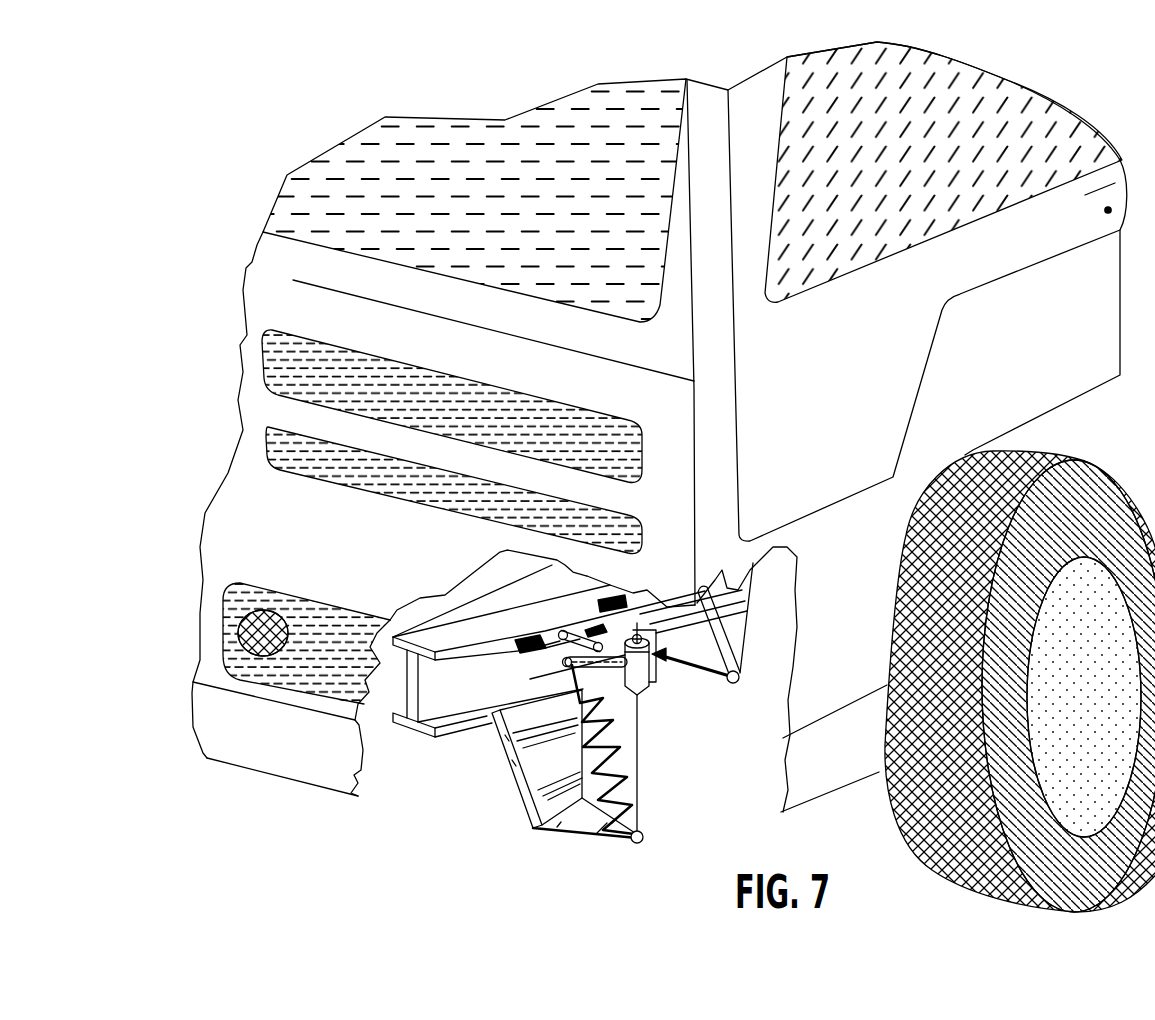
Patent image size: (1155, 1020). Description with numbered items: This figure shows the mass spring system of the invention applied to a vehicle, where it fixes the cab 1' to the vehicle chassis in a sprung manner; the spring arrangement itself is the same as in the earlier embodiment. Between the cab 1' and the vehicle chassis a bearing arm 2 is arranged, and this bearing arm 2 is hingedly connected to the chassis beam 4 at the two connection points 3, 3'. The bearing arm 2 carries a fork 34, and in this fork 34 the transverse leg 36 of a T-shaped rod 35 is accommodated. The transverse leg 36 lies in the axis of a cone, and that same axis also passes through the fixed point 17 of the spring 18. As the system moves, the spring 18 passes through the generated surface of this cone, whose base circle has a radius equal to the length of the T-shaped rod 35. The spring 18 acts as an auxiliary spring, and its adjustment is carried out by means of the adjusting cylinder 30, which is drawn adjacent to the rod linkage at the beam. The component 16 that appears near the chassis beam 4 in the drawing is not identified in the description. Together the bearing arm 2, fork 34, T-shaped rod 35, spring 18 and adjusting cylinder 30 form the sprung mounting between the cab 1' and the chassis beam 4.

The cab 1' is at (766, 679).
The bearing arm 2 is at (700, 667).
The hinged connection point 3 is at (549, 640).
The hinged connection point 3' is at (667, 572).
The chassis beam 4 is at (427, 734).
The mounting frame member 16 is at (560, 630).
The fixed point of the spring 17 is at (645, 836).
The spring 18 is at (610, 753).
The adjusting cylinder 30 is at (562, 629).
The fork 34 is at (745, 658).
The T-shaped rod 35 is at (595, 665).
The transverse leg 36 is at (647, 690).